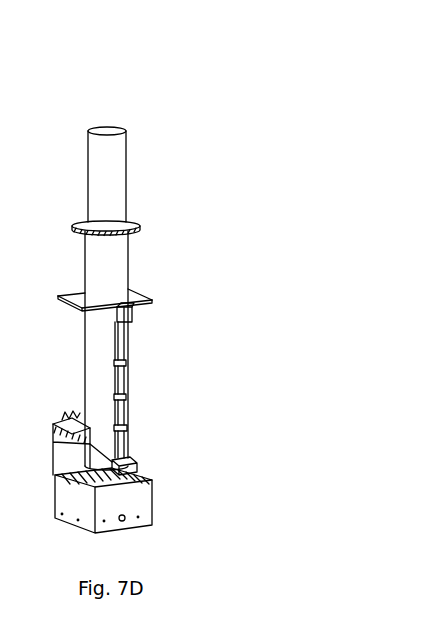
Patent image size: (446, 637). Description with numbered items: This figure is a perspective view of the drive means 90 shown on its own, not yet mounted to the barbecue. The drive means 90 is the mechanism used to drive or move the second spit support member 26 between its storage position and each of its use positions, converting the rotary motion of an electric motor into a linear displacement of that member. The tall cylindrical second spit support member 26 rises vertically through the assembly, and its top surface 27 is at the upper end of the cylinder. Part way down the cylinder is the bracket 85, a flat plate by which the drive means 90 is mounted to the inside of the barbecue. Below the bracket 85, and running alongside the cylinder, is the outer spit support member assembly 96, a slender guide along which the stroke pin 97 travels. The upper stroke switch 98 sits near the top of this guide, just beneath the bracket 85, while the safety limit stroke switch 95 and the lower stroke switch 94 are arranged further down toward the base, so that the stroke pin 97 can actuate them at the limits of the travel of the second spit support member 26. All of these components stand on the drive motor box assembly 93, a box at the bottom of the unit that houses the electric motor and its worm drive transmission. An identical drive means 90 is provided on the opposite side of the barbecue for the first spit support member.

The drive means 90 is at (300, 182).
The top surface 27 is at (117, 129).
The second spit support member 26 is at (115, 188).
The bracket 85 is at (143, 298).
The upper stroke switch 98 is at (133, 310).
The stroke pin 97 is at (125, 360).
The outer spit support member assembly 96 is at (125, 397).
The safety limit stroke switch 95 is at (127, 428).
The lower stroke switch 94 is at (133, 467).
The drive motor box assembly 93 is at (137, 503).